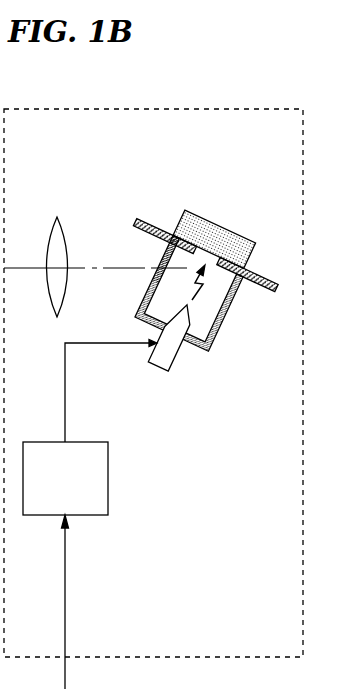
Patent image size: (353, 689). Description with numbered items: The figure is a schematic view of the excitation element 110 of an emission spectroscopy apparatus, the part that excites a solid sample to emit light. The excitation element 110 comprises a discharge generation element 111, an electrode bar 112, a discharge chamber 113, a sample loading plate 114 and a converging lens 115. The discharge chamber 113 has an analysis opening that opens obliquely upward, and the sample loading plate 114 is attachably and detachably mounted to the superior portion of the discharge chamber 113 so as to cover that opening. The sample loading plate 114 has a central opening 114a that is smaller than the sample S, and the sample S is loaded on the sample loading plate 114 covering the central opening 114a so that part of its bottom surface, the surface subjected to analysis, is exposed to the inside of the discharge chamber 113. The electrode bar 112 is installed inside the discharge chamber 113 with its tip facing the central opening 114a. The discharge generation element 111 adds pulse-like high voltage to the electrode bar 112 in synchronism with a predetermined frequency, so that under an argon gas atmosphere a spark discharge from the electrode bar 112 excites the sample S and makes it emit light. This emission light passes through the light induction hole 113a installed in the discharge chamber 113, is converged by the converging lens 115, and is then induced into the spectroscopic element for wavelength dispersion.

The excitation element 110 is at (157, 92).
The discharge generation element 111 is at (108, 488).
The electrode bar 112 is at (158, 366).
The discharge chamber 113 is at (216, 347).
The light induction hole 113a is at (158, 264).
The sample loading plate 114 is at (142, 222).
The central opening 114a is at (210, 268).
The converging lens 115 is at (52, 237).
The sample S is at (222, 236).